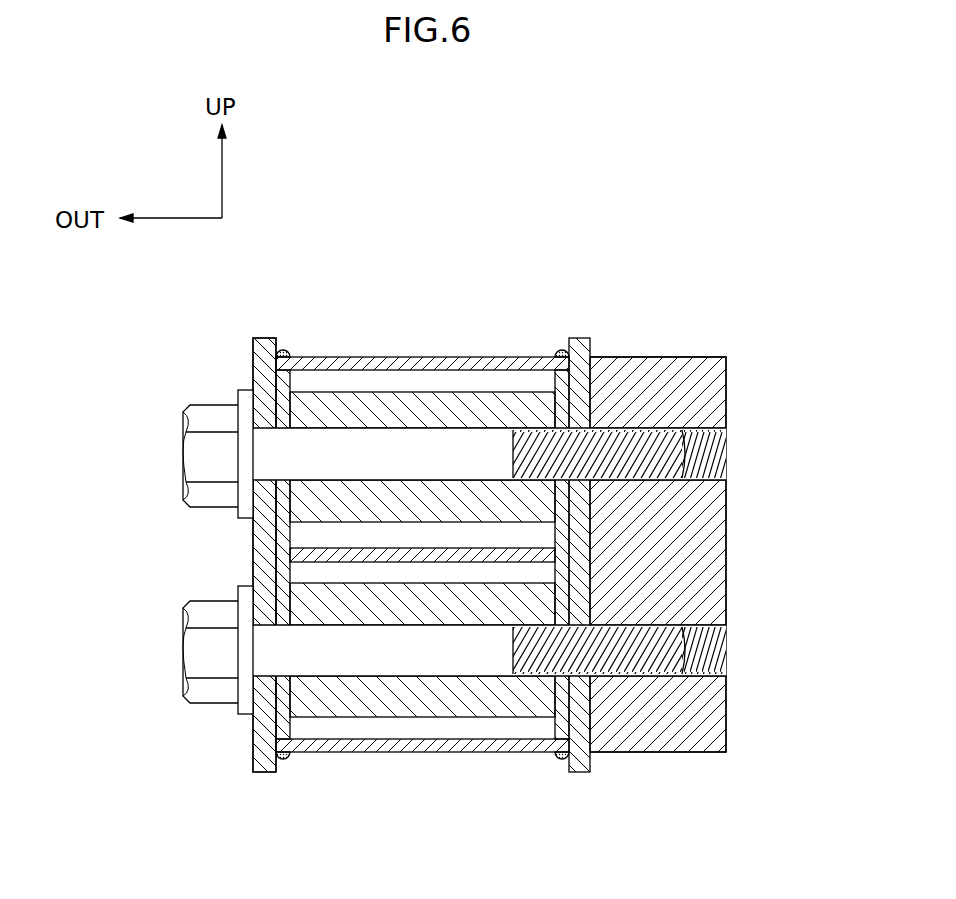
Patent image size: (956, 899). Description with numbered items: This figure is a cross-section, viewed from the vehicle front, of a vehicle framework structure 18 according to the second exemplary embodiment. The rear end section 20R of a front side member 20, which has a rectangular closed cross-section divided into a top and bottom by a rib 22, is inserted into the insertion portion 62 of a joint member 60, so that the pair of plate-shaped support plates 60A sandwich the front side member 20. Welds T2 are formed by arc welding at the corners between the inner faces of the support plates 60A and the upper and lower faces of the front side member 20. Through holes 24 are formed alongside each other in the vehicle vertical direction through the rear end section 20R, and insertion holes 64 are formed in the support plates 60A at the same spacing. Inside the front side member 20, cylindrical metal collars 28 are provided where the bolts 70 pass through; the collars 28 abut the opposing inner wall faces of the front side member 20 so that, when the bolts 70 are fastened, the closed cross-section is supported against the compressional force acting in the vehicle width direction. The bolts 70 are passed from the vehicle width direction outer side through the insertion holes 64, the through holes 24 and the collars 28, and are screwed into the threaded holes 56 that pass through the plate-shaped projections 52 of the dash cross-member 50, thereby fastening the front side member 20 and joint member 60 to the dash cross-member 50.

The vehicle framework structure 18 is at (673, 192).
The rear end section 20R is at (450, 357).
The front side member 20 is at (422, 502).
The rib 22 is at (400, 550).
The through hole 24 is at (300, 445).
The collar 28 is at (412, 405).
The dash cross-member 50 is at (663, 519).
The projection 52 is at (652, 380).
The threaded hole 56 is at (718, 462).
The joint member 60 is at (333, 583).
The insertion portion 62 is at (292, 712).
The support plate 60A is at (262, 338).
The insertion hole 64 is at (242, 440).
The bolt 70 is at (205, 457).
The weld T2 is at (283, 350).